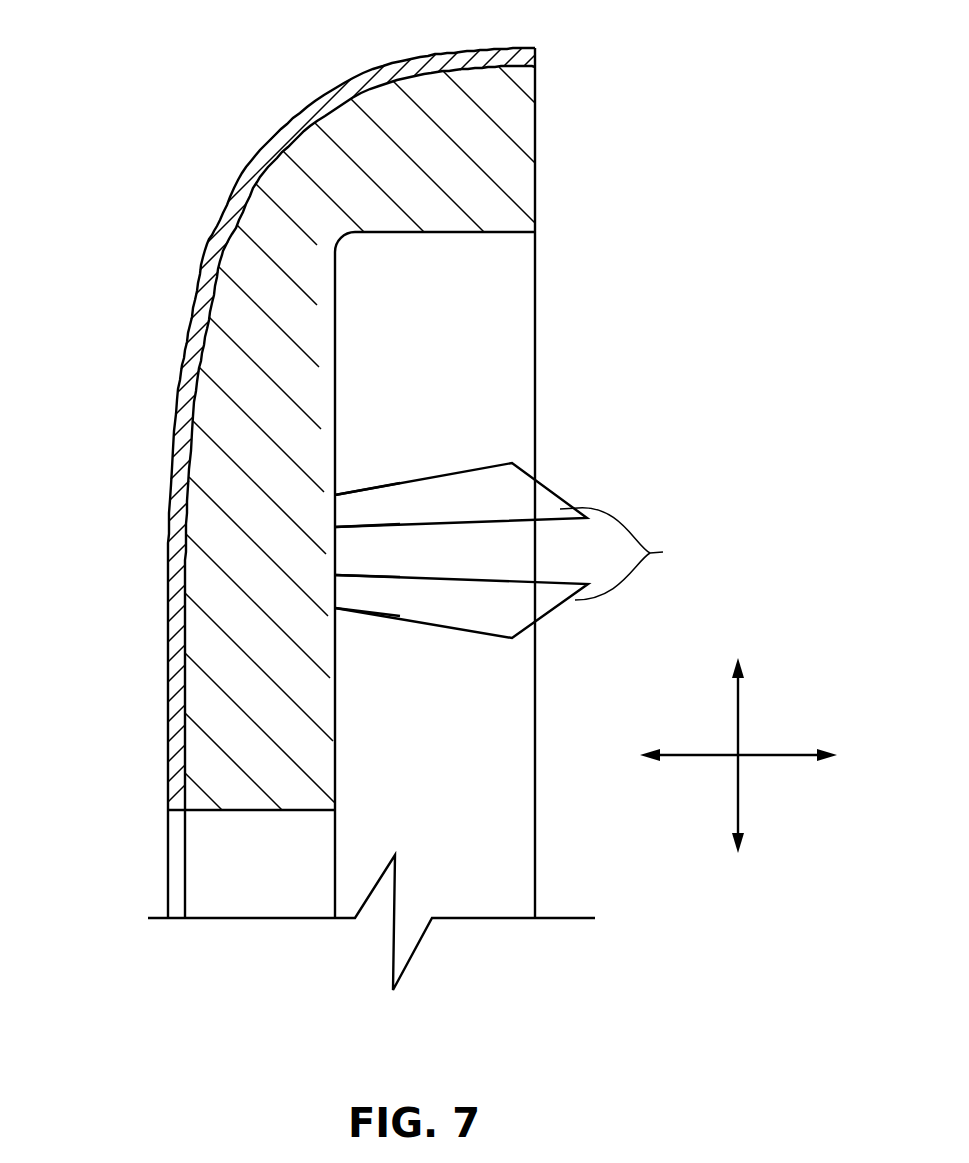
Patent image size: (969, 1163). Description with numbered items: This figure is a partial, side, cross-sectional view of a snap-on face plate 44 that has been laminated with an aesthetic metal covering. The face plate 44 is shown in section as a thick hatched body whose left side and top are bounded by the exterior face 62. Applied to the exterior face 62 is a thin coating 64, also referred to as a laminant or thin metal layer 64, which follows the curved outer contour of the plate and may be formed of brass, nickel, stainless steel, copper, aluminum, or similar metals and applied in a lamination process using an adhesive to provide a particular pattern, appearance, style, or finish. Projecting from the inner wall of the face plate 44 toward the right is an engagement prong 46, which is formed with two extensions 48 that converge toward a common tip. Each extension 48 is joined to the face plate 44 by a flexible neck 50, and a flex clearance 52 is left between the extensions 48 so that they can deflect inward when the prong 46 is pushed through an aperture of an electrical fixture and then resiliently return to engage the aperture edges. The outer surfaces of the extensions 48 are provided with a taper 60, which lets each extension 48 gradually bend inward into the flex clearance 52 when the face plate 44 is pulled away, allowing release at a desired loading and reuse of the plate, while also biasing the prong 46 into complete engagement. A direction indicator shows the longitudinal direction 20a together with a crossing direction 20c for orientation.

The face plate 44 is at (143, 228).
The engagement prong 46 is at (517, 562).
The extension 48 is at (630, 554).
The flexible neck 50 is at (373, 497).
The flex clearance 52 is at (482, 553).
The taper 60 is at (420, 472).
The exterior face 62 is at (163, 538).
The coating 64 is at (377, 75).
The longitudinal direction 20a is at (738, 697).
The circumferential direction 20c is at (785, 758).